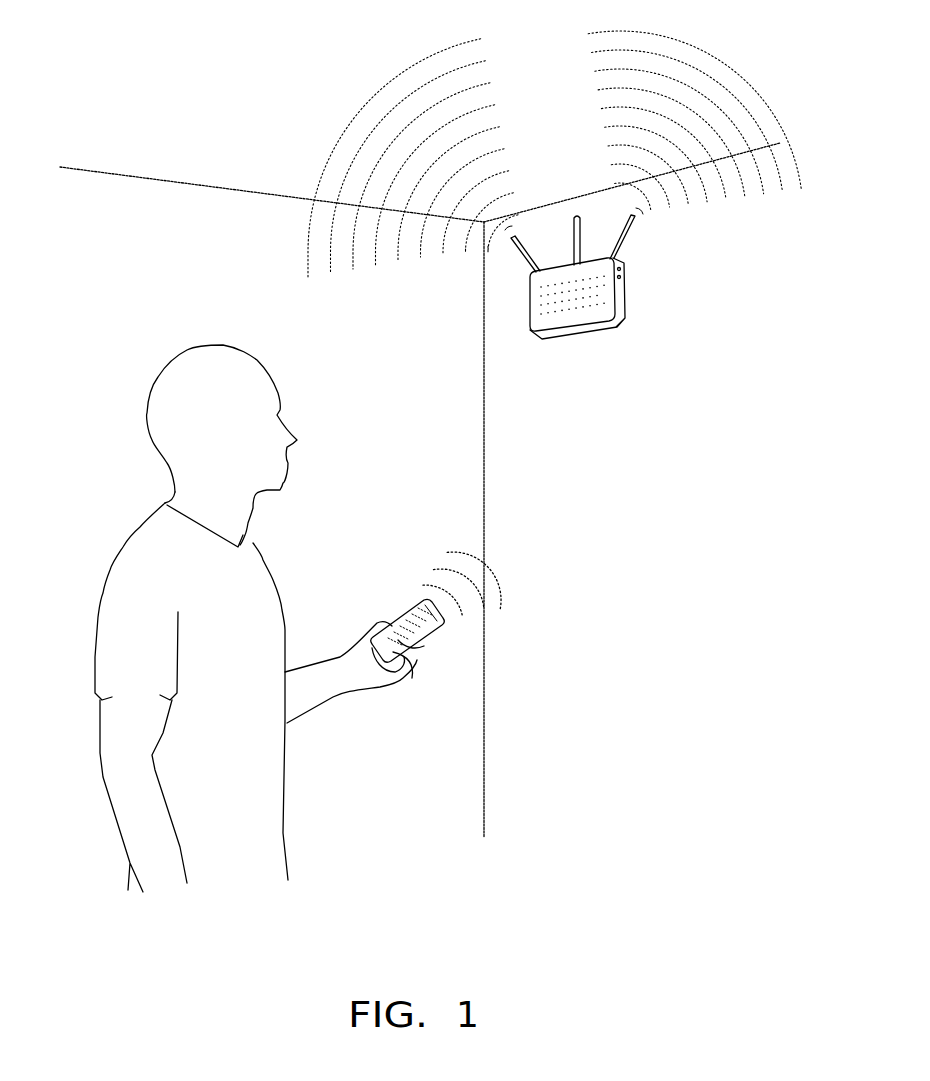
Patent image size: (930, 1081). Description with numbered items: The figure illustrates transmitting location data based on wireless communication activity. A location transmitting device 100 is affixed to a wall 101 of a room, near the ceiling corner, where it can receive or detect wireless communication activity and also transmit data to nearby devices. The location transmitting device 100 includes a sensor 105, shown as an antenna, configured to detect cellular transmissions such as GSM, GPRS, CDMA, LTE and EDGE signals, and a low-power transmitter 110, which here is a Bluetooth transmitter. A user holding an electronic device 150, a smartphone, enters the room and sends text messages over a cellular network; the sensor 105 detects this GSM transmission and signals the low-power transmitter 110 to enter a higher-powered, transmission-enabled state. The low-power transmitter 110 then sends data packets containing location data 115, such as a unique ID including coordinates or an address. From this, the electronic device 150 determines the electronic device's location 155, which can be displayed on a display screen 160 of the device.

The location transmitting device 100 is at (622, 310).
The wall 101 is at (600, 450).
The sensor 105 is at (575, 212).
The low-power transmitter 110 is at (632, 228).
The location data 115 is at (325, 193).
The electronic device 150 is at (441, 628).
The electronic device's location 155 is at (390, 627).
The display screen 160 is at (413, 648).